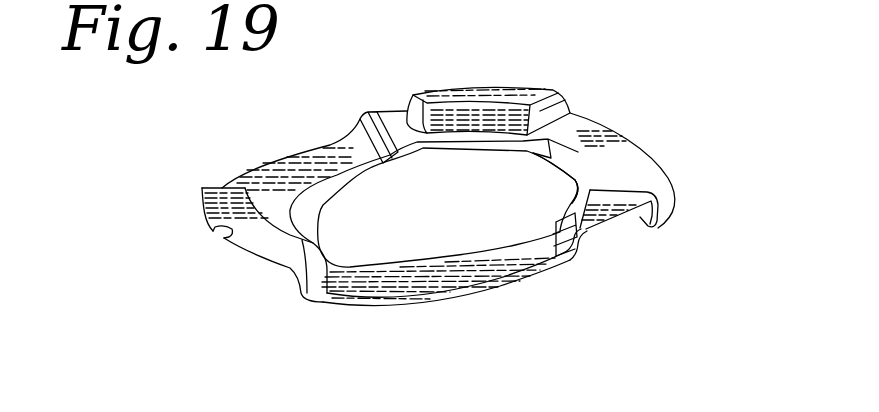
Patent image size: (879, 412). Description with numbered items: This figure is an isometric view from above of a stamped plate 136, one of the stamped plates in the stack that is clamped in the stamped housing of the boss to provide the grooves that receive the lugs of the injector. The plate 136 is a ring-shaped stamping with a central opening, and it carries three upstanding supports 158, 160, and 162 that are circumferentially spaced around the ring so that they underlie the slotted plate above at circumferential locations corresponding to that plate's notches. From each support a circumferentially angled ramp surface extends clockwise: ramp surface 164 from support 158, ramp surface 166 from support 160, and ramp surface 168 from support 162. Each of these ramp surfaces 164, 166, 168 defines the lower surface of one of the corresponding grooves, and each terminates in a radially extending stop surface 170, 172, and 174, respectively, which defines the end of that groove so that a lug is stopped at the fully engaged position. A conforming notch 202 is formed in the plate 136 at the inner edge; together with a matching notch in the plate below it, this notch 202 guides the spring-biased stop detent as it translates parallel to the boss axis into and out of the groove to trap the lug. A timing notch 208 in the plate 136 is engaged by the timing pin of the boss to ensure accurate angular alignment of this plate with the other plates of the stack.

The stamped plate 136 is at (496, 288).
The upstanding support 158 is at (607, 203).
The upstanding support 160 is at (495, 88).
The upstanding support 162 is at (277, 248).
The circumferentially angled ramp surface 164 is at (447, 280).
The circumferentially angled ramp surface 166 is at (583, 123).
The circumferentially angled ramp surface 168 is at (297, 158).
The radially extending stop surface 170 is at (350, 258).
The radially extending stop surface 172 is at (580, 181).
The radially extending stop surface 174 is at (362, 125).
The notch 202 is at (553, 158).
The timing notch 208 is at (226, 238).